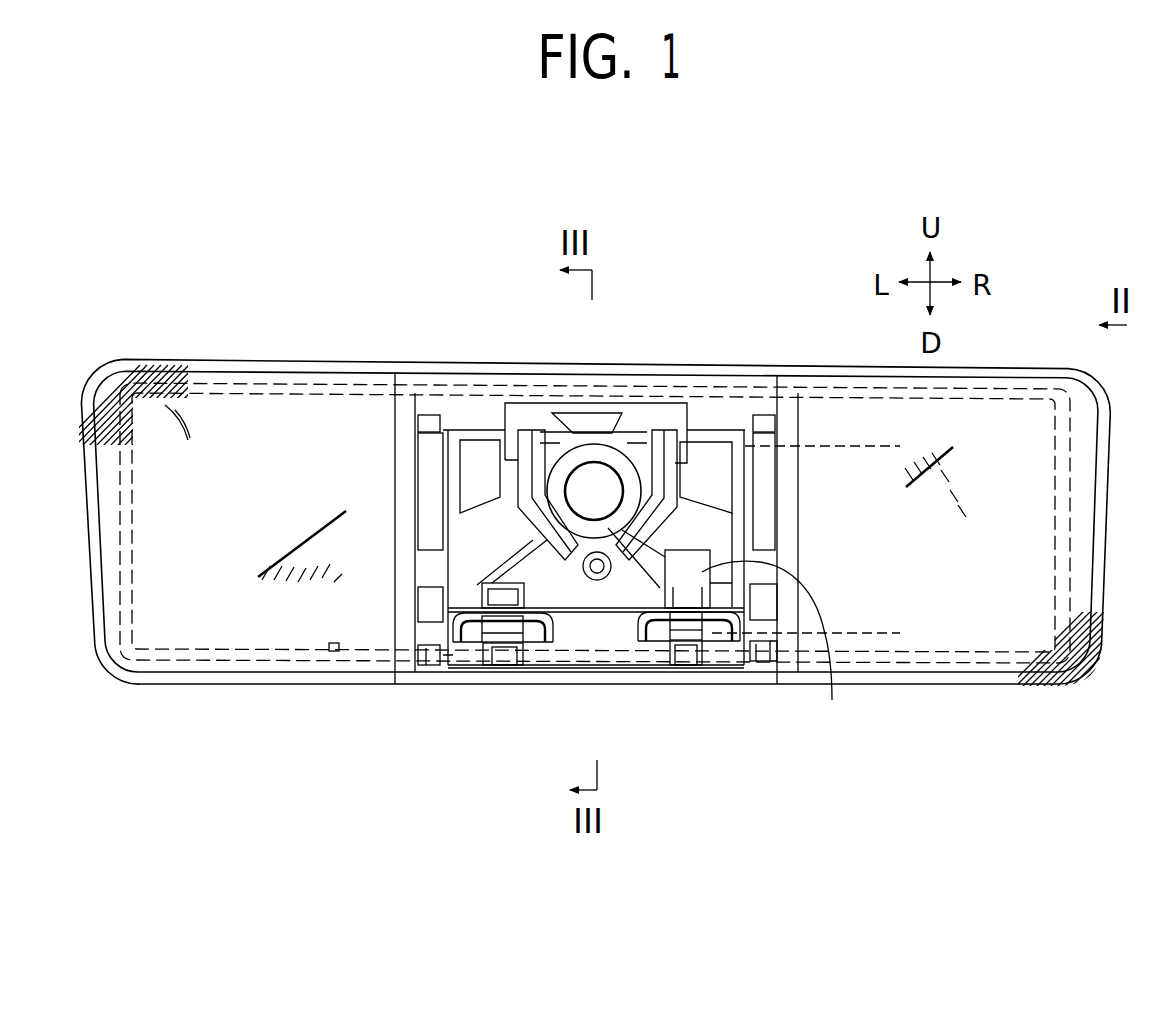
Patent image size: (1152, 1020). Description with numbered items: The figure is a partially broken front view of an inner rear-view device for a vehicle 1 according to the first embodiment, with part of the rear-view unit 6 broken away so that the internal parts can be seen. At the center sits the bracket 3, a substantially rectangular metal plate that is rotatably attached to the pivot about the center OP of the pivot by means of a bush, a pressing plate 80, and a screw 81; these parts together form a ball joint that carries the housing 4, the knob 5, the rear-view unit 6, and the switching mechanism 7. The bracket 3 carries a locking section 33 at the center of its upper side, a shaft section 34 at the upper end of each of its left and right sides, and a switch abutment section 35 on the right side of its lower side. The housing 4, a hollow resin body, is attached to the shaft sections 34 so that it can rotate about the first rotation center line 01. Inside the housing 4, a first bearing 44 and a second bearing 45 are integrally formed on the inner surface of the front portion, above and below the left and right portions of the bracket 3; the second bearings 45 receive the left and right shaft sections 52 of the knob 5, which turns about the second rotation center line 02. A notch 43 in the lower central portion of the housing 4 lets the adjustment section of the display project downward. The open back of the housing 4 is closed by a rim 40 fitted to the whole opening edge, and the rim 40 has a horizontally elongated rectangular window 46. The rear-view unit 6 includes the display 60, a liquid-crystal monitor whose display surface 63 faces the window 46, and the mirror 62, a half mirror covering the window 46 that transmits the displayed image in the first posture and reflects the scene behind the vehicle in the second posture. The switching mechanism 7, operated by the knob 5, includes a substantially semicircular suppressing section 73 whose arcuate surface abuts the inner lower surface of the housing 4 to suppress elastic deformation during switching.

The inner rear-view device for a vehicle 1 is at (302, 318).
The bracket 3 is at (480, 417).
The housing 4 is at (982, 362).
The knob 5 is at (615, 642).
The rear-view unit 6 is at (985, 442).
The switching mechanism 7 is at (463, 665).
The locking section 33 is at (645, 418).
The shaft section 34 is at (440, 405).
The switch abutment section 35 is at (832, 700).
The rim 40 is at (245, 686).
The notch 43 is at (545, 680).
The first bearing 44 is at (418, 425).
The second bearing 45 is at (430, 662).
The window 46 is at (333, 650).
The shaft section 52 is at (430, 662).
The display 60 is at (210, 352).
The mirror 62 is at (198, 428).
The display surface 63 is at (265, 430).
The suppressing section 73 is at (500, 665).
The pressing plate 80 is at (648, 452).
The screw 81 is at (594, 581).
The center of the pivot OP is at (591, 490).
The first rotation center line 01 is at (866, 446).
The second rotation center line 02 is at (885, 633).